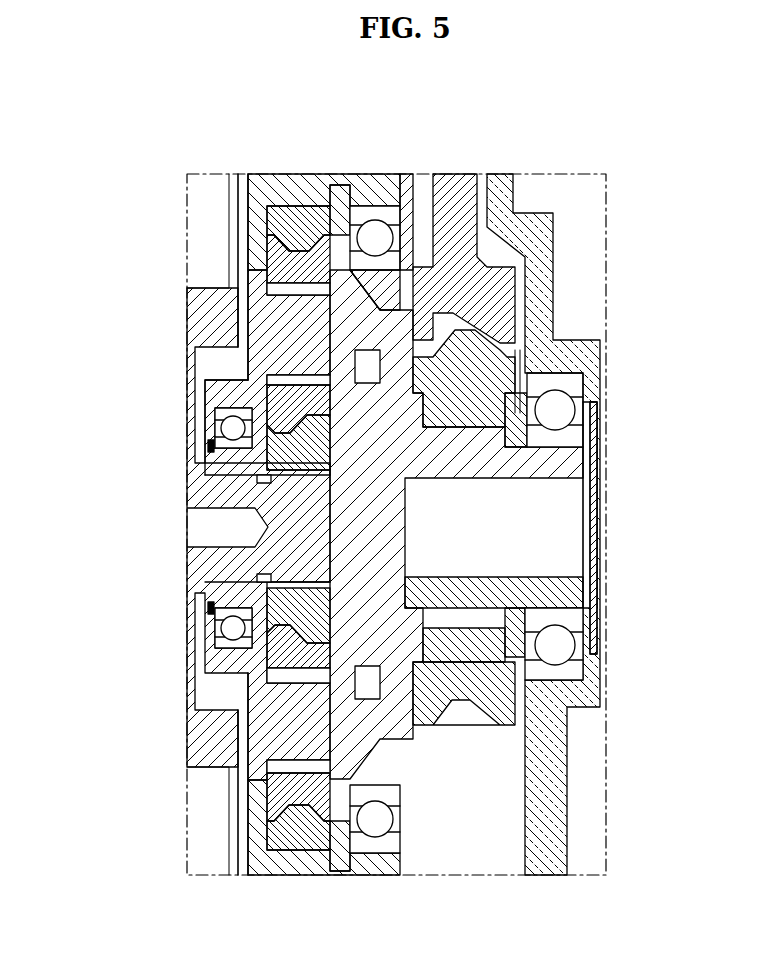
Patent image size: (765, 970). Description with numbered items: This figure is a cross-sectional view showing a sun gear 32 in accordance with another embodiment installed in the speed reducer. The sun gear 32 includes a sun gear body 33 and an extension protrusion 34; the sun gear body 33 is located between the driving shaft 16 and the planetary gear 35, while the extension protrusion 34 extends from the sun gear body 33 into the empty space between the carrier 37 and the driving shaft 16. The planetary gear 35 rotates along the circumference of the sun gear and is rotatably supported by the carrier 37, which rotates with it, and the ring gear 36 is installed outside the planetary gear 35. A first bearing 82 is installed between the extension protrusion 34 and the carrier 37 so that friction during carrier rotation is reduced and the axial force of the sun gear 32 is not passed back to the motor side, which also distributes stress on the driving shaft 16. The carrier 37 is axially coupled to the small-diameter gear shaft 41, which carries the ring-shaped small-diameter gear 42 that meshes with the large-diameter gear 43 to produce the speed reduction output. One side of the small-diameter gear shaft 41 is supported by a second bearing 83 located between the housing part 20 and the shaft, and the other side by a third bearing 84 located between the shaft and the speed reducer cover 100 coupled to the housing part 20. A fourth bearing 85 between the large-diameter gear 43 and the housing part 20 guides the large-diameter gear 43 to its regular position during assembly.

The driving shaft 16 is at (290, 546).
The housing part 20 is at (290, 190).
The sun gear 32 is at (78, 425).
The sun gear body 33 is at (288, 500).
The extension protrusion 34 is at (233, 460).
The planetary gear 35 is at (278, 406).
The ring gear 36 is at (270, 218).
The carrier 37 is at (312, 718).
The small-diameter gear shaft 41 is at (513, 585).
The small-diameter gear 42 is at (470, 367).
The large-diameter gear 43 is at (482, 285).
The first bearing 82 is at (215, 637).
The second bearing 83 is at (392, 848).
The third bearing 84 is at (570, 668).
The fourth bearing 85 is at (372, 205).
The speed reducer cover 100 is at (594, 506).